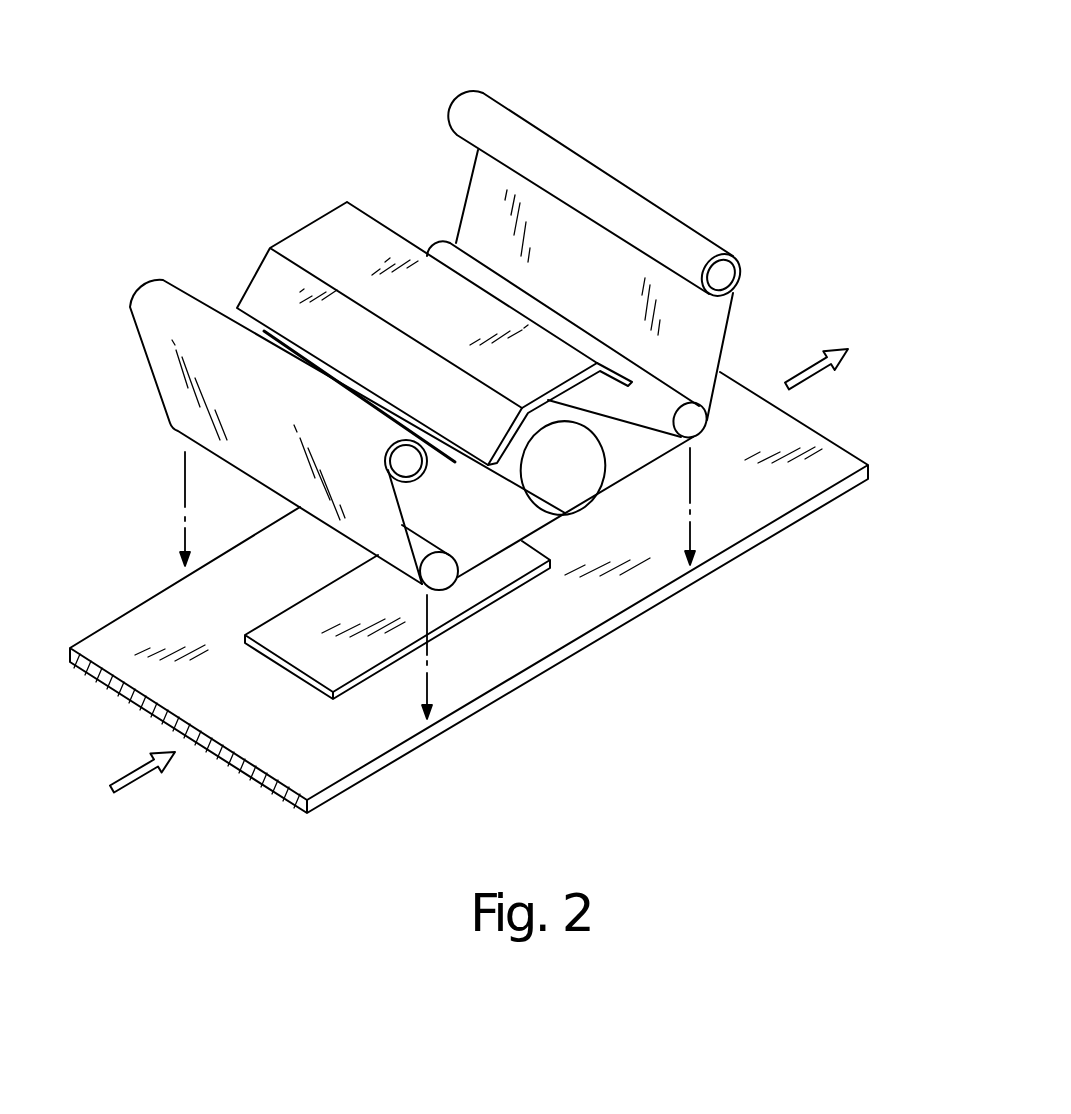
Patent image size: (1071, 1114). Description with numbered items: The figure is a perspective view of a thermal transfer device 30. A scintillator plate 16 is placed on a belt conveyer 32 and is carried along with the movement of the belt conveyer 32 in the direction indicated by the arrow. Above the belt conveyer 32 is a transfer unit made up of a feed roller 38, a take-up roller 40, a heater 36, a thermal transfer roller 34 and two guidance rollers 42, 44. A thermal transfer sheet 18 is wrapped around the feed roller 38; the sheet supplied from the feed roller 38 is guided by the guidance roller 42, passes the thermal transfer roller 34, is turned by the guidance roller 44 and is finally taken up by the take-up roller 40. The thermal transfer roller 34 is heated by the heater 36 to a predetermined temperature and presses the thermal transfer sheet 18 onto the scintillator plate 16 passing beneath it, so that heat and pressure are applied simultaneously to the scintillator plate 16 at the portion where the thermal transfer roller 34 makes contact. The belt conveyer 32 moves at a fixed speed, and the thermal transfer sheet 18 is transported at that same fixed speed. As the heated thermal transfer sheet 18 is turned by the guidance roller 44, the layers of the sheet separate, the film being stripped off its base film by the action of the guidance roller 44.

The scintillator plate 16 is at (370, 672).
The thermal transfer sheet 18 is at (732, 325).
The thermal transfer device 30 is at (745, 174).
The belt conveyer 32 is at (733, 513).
The thermal transfer roller 34 is at (607, 467).
The heater 36 is at (302, 227).
The feed roller 38 is at (130, 308).
The take-up roller 40 is at (447, 108).
The guidance roller 42 is at (463, 568).
The guidance roller 44 is at (693, 420).